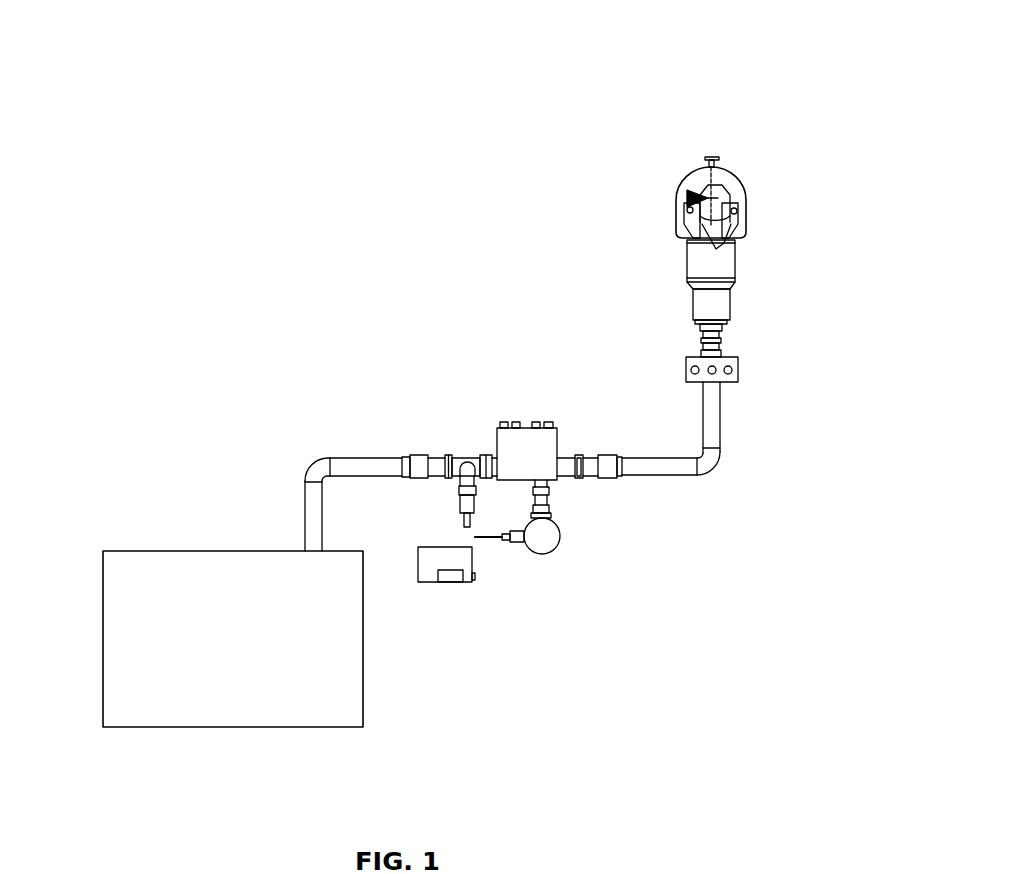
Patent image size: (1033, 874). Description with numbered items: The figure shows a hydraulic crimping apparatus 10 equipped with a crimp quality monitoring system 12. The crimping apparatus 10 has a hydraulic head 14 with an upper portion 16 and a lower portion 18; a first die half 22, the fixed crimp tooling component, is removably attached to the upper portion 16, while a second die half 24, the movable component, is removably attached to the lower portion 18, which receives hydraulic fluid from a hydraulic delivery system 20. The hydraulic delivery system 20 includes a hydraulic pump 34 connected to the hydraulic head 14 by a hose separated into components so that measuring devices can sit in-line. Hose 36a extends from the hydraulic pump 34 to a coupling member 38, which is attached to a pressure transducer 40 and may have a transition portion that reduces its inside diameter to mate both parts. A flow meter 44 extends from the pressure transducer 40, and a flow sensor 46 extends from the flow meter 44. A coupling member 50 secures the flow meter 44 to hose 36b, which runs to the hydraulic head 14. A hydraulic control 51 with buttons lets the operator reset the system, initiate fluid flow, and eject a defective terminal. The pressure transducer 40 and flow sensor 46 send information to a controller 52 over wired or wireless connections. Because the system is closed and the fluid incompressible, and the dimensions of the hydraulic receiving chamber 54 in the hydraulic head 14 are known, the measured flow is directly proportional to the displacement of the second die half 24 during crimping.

The crimping apparatus 10 is at (772, 85).
The crimp quality monitoring system 12 is at (511, 330).
The hydraulic head 14 is at (780, 202).
The upper portion 16 is at (732, 184).
The lower portion 18 is at (687, 235).
The hydraulic delivery system 20 is at (310, 290).
The first die half 22 is at (697, 190).
The second die half 24 is at (722, 233).
The hydraulic pump 34 is at (132, 663).
The hose 36a is at (313, 470).
The hose 36b is at (717, 463).
The coupling member 38 is at (430, 453).
The pressure transducer 40 is at (458, 492).
The flow meter 44 is at (542, 430).
The flow sensor 46 is at (552, 545).
The coupling member 50 is at (605, 477).
The hydraulic control 51 is at (735, 370).
The controller 52 is at (453, 577).
The hydraulic receiving chamber 54 is at (728, 303).